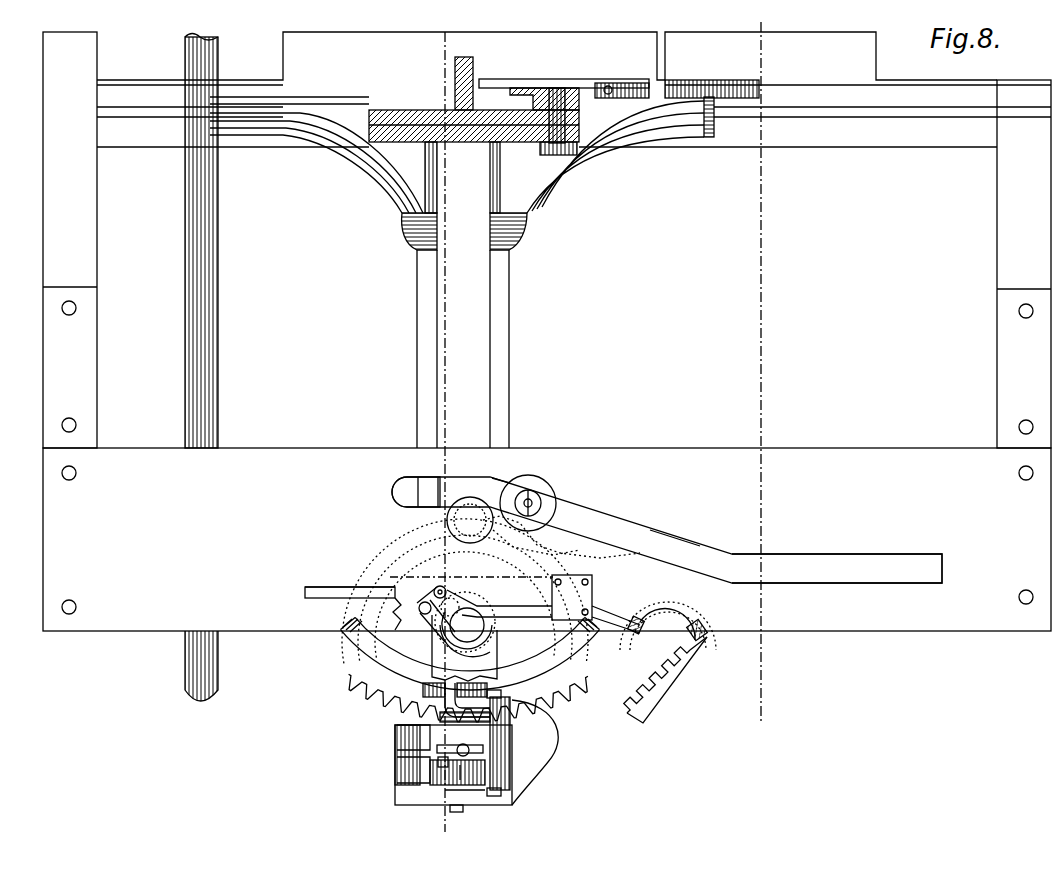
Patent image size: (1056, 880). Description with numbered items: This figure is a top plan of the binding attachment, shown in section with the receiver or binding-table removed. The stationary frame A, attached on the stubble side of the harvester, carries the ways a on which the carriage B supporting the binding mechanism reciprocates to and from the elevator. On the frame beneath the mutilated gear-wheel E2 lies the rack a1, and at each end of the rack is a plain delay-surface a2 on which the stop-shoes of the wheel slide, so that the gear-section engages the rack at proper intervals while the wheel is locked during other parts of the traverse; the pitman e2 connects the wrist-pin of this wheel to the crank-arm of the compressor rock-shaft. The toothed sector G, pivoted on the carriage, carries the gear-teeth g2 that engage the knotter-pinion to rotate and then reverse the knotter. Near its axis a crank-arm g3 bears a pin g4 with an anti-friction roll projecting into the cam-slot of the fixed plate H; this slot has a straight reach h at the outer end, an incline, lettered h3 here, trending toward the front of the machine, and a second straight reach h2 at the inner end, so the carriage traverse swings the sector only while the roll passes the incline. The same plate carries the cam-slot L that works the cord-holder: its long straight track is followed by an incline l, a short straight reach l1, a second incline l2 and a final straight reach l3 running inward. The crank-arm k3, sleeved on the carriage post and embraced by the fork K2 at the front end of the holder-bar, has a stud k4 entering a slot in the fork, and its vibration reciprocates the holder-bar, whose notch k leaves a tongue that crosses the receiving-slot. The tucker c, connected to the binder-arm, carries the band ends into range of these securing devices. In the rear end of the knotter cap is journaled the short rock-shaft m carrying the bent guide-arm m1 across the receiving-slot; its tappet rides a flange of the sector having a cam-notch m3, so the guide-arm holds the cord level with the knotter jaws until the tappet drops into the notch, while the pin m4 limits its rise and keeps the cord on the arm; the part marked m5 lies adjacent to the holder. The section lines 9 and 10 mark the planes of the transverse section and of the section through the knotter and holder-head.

The stationary frame A is at (547, 331).
The ways a is at (840, 117).
The rack a1 is at (759, 92).
The delay-surface a2 is at (498, 88).
The mutilated gear-wheel E2 is at (575, 88).
The pitman e2 is at (606, 86).
The carriage B is at (476, 477).
The section line 10 is at (418, 272).
The section line 9 is at (760, 373).
The fixed plate H is at (667, 530).
The straight reach h is at (836, 568).
The second straight reach h2 is at (395, 490).
The lever portion h3 is at (690, 548).
The crank-arm g3 is at (510, 494).
The pin g4 is at (540, 500).
The cam-slot L is at (353, 594).
The incline l is at (618, 620).
The short straight reach l1 is at (560, 590).
The second incline l2 is at (474, 604).
The straight reach l3 is at (318, 596).
The notch k is at (445, 590).
The tucker c is at (455, 577).
The stud k4 is at (420, 609).
The crank-arm k3 is at (440, 628).
The fork K2 is at (467, 634).
The toothed sector G is at (518, 649).
The gear teeth g2 is at (528, 671).
The clamp piece m5 is at (440, 684).
The cam-notch m3 is at (446, 700).
The rock-shaft m is at (505, 764).
The guide-arm m1 is at (437, 748).
The pin m4 is at (457, 779).